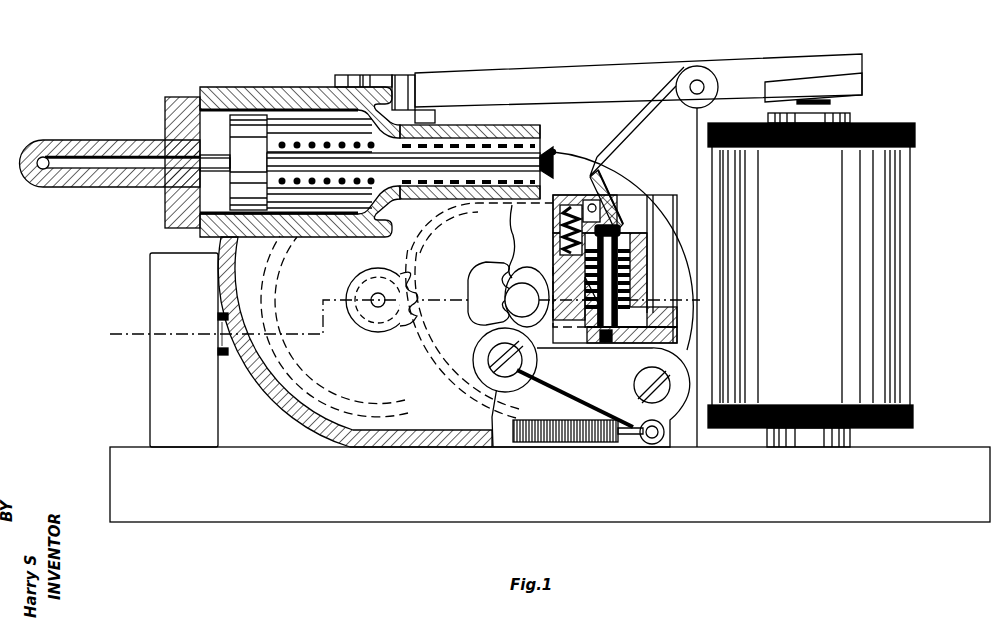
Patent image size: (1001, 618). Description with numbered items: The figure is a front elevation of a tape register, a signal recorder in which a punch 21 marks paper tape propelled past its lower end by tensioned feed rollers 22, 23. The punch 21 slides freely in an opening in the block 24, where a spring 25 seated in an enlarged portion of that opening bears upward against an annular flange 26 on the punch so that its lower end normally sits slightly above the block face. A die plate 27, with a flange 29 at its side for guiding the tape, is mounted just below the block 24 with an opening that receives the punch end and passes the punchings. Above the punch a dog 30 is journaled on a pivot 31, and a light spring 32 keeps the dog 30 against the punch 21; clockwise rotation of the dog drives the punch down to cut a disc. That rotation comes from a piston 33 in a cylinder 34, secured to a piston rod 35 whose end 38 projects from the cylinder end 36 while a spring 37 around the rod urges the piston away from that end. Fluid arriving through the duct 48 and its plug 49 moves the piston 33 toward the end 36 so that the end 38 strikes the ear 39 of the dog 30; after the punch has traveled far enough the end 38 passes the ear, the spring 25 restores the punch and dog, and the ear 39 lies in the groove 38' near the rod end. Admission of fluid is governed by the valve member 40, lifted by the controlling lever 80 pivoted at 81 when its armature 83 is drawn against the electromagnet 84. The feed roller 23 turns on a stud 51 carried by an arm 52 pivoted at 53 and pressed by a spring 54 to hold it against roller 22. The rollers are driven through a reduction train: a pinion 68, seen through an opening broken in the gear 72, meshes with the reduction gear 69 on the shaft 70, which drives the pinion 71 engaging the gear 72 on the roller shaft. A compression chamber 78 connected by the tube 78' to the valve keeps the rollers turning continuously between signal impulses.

The punch 21 is at (620, 232).
The feed roller 22 is at (532, 342).
The feed roller 23 is at (474, 352).
The block 24 is at (580, 283).
The spring 25 is at (636, 291).
The annular flange 26 is at (640, 252).
The die plate 27 is at (643, 343).
The flange 29 is at (512, 248).
The dog 30 is at (618, 200).
The pivot 31 is at (595, 205).
The spring 32 is at (565, 219).
The piston 33 is at (233, 162).
The cylinder 34 is at (300, 87).
The piston rod 35 is at (403, 162).
The cylinder end 36 is at (540, 132).
The spring 37 is at (340, 195).
The end of rod 38 is at (561, 162).
The groove 38' is at (574, 137).
The ear 39 is at (595, 175).
The movable valve member 40 is at (385, 75).
The duct 48 is at (96, 139).
The plug 49 is at (183, 97).
The stud 51 is at (517, 364).
The arm 52 is at (668, 412).
The pivot 53 is at (636, 390).
The spring 54 is at (570, 443).
The pinion 68 is at (490, 268).
The reduction gear 69 is at (497, 290).
The shaft 70 is at (376, 306).
The pinion 71 is at (402, 272).
The gear 72 is at (424, 352).
The compression chamber 78 is at (168, 350).
The tube 78' is at (238, 359).
The controlling lever 80 is at (512, 73).
The pivot 81 is at (703, 82).
The armature 83 is at (862, 87).
The electromagnet 84 is at (912, 253).